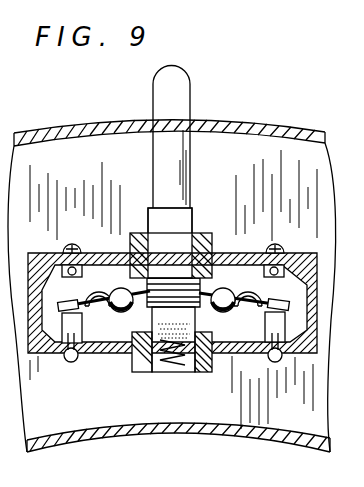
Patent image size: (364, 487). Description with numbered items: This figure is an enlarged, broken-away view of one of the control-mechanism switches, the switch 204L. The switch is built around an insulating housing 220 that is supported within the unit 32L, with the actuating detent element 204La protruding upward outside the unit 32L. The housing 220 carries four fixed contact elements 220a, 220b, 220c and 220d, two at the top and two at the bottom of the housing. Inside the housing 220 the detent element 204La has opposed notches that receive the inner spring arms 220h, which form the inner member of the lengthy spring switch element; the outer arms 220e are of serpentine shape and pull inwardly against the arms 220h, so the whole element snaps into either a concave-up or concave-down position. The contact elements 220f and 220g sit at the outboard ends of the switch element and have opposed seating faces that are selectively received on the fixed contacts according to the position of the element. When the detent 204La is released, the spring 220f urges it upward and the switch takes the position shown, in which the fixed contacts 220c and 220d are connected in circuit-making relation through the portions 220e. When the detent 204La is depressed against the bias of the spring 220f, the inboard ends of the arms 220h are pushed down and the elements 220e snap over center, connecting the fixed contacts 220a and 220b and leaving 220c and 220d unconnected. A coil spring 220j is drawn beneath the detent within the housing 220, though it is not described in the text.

The unit 32L is at (270, 129).
The actuating detent element 204La is at (190, 153).
The switch 204L is at (214, 258).
The insulating housing 220 is at (219, 354).
The fixed contact element 220a is at (75, 262).
The fixed contact element 220b is at (281, 260).
The fixed contact element 220c is at (72, 323).
The fixed contact element 220d is at (271, 342).
The outer arms 220e is at (120, 312).
The contact element 220f is at (96, 296).
The contact element 220g is at (282, 294).
The spring arms 220h is at (118, 297).
The compression spring 220j is at (165, 357).